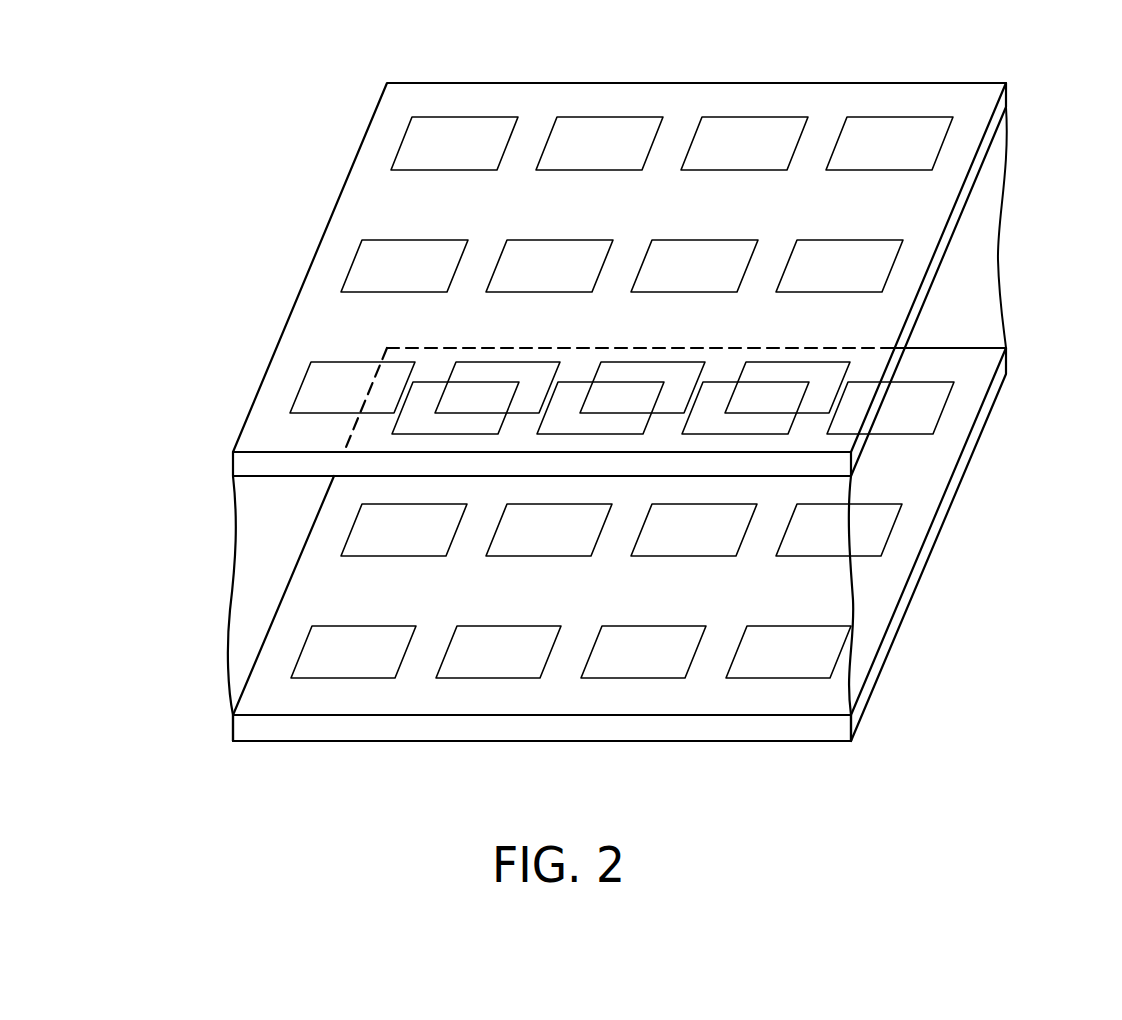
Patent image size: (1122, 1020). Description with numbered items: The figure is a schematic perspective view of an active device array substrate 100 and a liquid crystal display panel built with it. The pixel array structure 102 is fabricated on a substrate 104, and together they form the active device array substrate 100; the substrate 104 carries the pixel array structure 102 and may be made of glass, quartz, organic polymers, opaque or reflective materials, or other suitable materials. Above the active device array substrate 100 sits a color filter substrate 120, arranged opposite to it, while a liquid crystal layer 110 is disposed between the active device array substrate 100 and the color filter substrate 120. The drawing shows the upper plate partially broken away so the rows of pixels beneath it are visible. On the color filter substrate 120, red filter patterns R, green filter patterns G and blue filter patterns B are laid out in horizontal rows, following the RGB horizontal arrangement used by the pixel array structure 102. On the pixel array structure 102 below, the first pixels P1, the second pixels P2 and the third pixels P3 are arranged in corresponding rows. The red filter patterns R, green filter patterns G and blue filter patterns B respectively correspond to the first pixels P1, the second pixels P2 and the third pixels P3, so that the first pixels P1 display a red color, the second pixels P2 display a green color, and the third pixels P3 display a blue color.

The active device array substrate 100 is at (1078, 650).
The pixel array structure 102 is at (822, 697).
The substrate 104 is at (833, 727).
The liquid crystal layer 110 is at (968, 295).
The color filter substrate 120 is at (973, 95).
The red filter patterns R is at (403, 143).
The green filter patterns G is at (348, 265).
The blue filter patterns B is at (301, 388).
The first pixels P1 is at (394, 429).
The second pixels P2 is at (352, 530).
The third pixels P3 is at (302, 652).